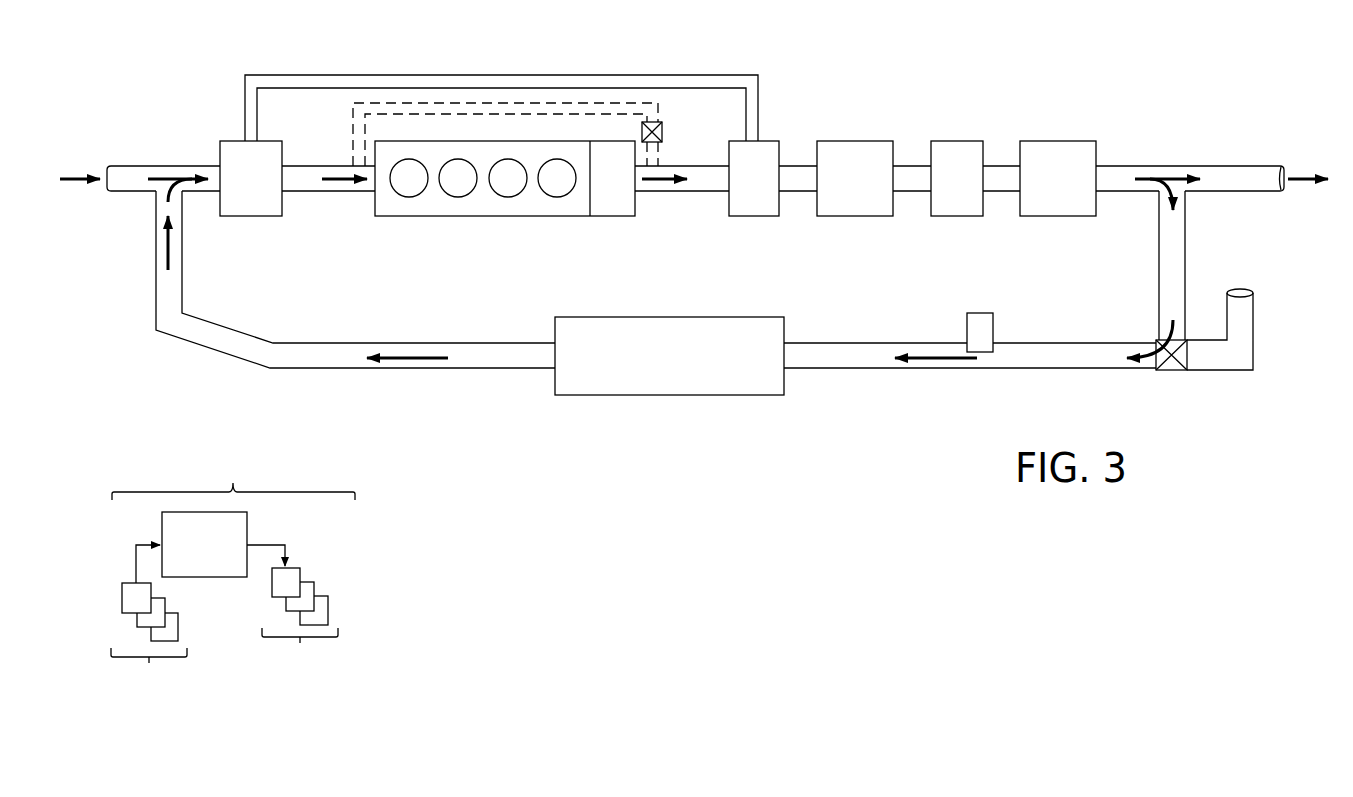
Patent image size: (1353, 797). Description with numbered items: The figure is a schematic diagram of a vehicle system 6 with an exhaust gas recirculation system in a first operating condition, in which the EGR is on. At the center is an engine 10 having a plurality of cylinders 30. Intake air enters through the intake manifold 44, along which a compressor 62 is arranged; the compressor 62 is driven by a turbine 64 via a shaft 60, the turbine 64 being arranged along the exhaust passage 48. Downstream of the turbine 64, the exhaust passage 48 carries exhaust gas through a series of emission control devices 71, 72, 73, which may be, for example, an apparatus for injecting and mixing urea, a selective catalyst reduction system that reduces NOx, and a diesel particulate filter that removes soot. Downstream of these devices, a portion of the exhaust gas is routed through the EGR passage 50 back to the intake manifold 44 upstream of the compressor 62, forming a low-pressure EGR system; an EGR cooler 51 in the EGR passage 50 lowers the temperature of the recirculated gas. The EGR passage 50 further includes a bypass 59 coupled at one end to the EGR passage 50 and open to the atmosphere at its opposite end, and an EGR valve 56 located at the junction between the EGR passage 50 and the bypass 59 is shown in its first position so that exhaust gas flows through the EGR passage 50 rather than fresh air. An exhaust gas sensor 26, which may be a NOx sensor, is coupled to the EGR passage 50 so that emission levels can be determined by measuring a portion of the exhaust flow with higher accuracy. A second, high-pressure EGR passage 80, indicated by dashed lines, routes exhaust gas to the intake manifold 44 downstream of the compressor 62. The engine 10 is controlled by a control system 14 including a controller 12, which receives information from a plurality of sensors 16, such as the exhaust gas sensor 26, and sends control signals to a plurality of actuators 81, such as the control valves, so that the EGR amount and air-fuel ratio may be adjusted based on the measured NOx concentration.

The vehicle system 6 is at (823, 68).
The engine 10 is at (505, 204).
The controller 12 is at (192, 555).
The control system 14 is at (601, 189).
The sensors 16 is at (149, 624).
The exhaust gas sensor 26 is at (980, 313).
The cylinders 30 is at (563, 193).
The intake manifold 44 is at (290, 189).
The exhaust passage 48 is at (696, 189).
The EGR passage 50 is at (1185, 278).
The EGR cooler 51 is at (657, 365).
The EGR valve 56 is at (1187, 358).
The bypass 59 is at (1253, 317).
The shaft 60 is at (448, 75).
The compressor 62 is at (239, 189).
The turbine 64 is at (742, 189).
The emission control device 71 is at (843, 189).
The emission control device 72 is at (945, 189).
The emission control device 73 is at (1046, 189).
The EGR passage 80 is at (662, 148).
The actuators 81 is at (300, 615).